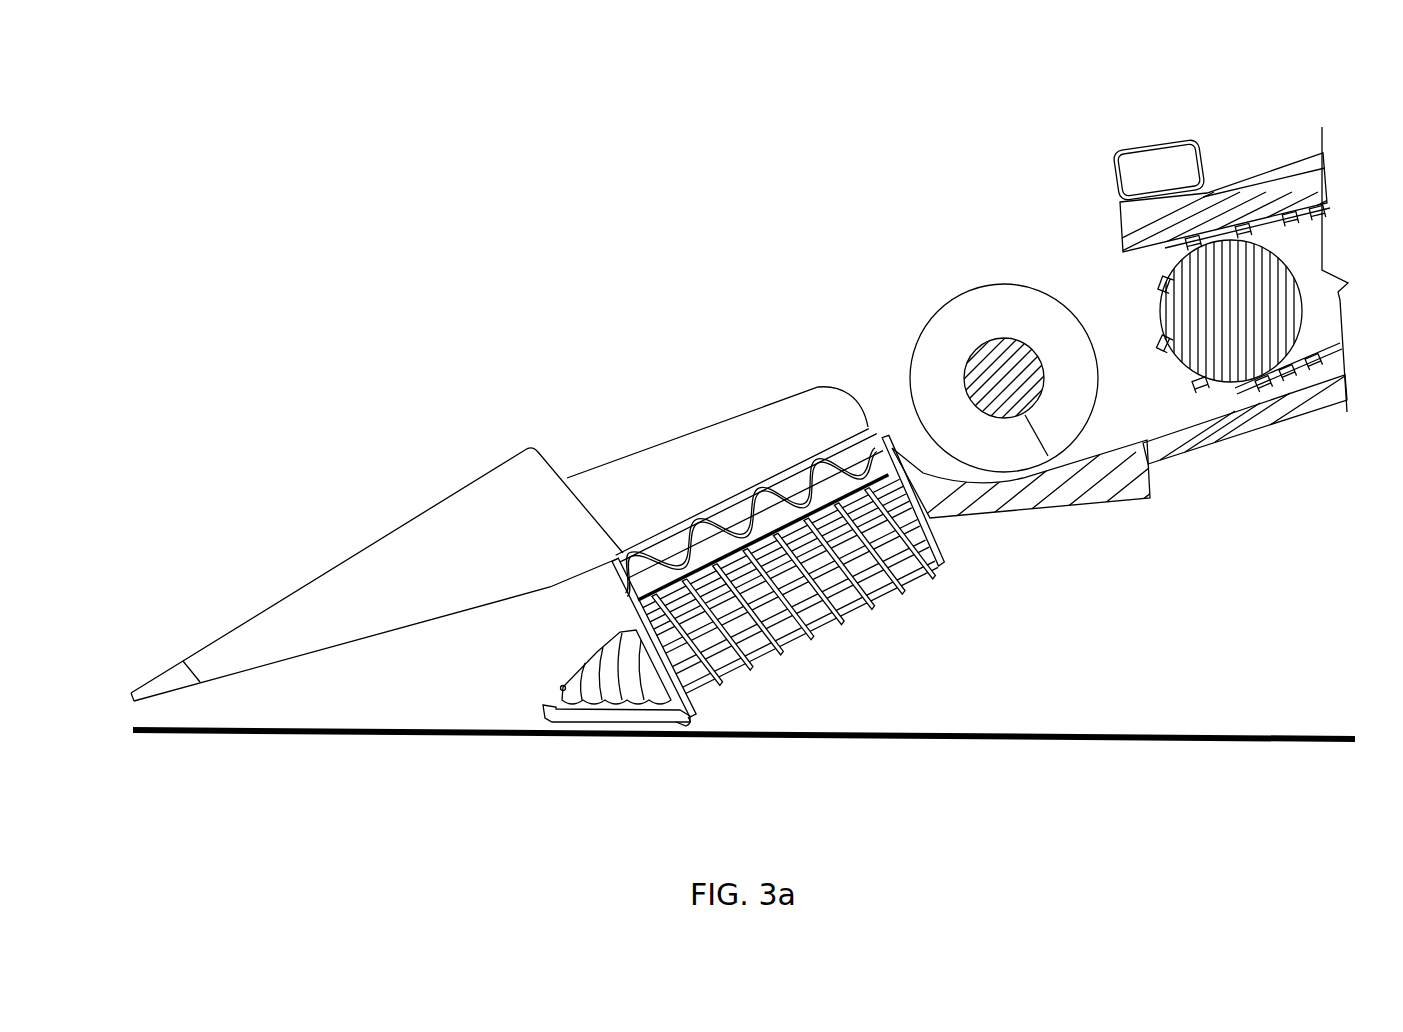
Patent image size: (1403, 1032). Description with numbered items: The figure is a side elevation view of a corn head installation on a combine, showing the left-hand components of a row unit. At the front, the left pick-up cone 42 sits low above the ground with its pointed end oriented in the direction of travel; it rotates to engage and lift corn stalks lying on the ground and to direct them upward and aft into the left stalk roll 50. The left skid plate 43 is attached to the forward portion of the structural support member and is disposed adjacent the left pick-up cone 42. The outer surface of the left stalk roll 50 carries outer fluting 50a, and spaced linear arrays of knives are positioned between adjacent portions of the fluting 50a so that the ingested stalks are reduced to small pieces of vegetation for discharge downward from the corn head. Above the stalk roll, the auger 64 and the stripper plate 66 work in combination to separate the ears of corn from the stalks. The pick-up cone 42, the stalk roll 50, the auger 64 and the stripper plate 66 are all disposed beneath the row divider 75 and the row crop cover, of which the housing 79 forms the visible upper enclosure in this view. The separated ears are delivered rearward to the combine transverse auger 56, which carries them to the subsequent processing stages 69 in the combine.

The row divider 75 is at (362, 570).
The housing 79 is at (637, 473).
The auger 64 is at (747, 517).
The stripper plate 66 is at (821, 500).
The left stalk roll 50 is at (816, 608).
The outer fluting 50a is at (887, 565).
The combine transverse auger 56 is at (987, 298).
The subsequent processing stages 69 is at (1256, 148).
The left pick-up cone 42 is at (590, 677).
The left skid plate 43 is at (575, 717).